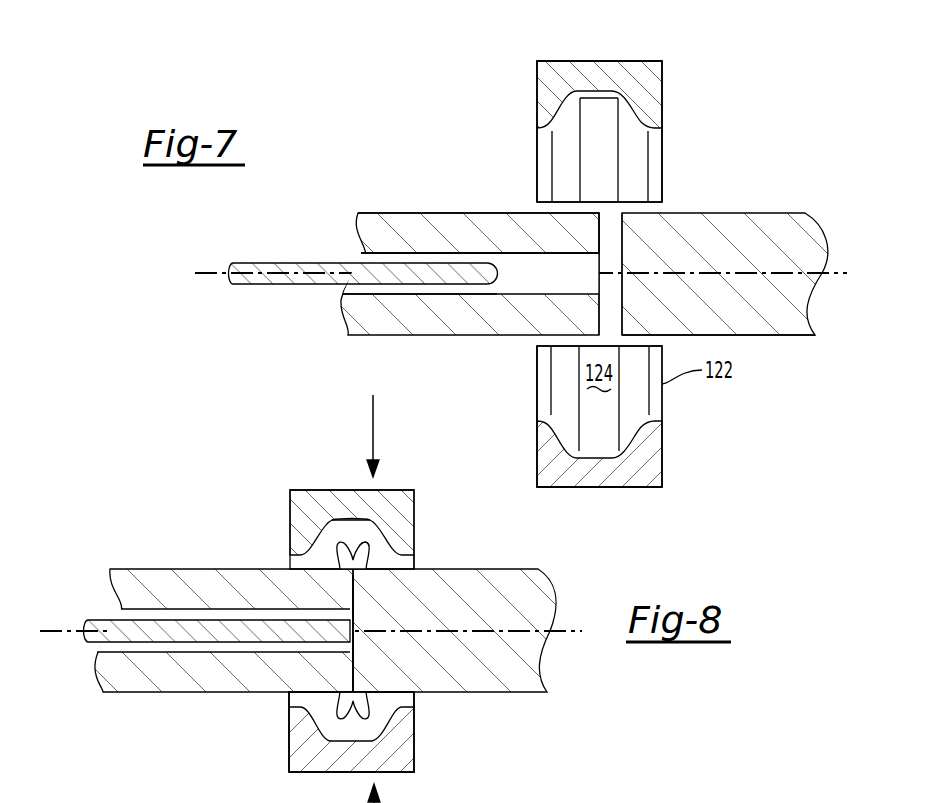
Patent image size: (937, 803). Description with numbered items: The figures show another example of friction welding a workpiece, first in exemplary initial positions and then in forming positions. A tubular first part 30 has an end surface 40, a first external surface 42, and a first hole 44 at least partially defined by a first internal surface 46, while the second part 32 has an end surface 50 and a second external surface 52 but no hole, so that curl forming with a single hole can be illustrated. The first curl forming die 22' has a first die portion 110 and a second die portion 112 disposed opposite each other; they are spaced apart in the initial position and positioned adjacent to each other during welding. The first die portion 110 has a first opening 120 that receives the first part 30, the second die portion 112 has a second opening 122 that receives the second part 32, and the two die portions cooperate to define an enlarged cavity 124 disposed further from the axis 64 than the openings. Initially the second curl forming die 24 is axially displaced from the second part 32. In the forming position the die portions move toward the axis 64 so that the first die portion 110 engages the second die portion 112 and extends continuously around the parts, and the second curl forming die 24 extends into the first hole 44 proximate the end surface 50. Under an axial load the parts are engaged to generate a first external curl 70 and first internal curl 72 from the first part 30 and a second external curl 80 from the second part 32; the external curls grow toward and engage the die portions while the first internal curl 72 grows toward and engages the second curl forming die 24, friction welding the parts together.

In FIG. 7, the first curl forming die 22' is at (641, 287).
In FIG. 8, the first curl forming die 22' is at (322, 585).
In FIG. 7, the second curl forming die 24 is at (310, 265).
In FIG. 8, the second curl forming die 24 is at (92, 637).
In FIG. 7, the first part 30 is at (402, 213).
In FIG. 7, the second part 32 is at (768, 212).
In FIG. 8, the second part 32 is at (504, 573).
In FIG. 7, the end surface 40 is at (597, 305).
In FIG. 8, the end surface 40 is at (345, 652).
In FIG. 7, the first external surface 42 is at (456, 213).
In FIG. 7, the first hole 44 is at (368, 288).
In FIG. 7, the first internal surface 46 is at (524, 253).
In FIG. 7, the end surface 50 is at (624, 247).
In FIG. 8, the end surface 50 is at (355, 580).
In FIG. 7, the second external surface 52 is at (765, 335).
In FIG. 7, the axis 64 is at (205, 273).
In FIG. 8, the axis 64 is at (80, 631).
In FIG. 8, the first external curl 70 is at (348, 548).
In FIG. 8, the first internal curl 72 is at (362, 627).
In FIG. 8, the second external curl 80 is at (371, 549).
In FIG. 7, the first die portion 110 is at (662, 93).
In FIG. 7, the second die portion 112 is at (662, 458).
In FIG. 8, the second die portion 112 is at (417, 748).
In FIG. 7, the first opening 120 is at (537, 374).
In FIG. 8, the first opening 120 is at (297, 702).
In FIG. 7, the second opening 122 is at (662, 160).
In FIG. 8, the second opening 122 is at (416, 701).
In FIG. 7, the cavity 124 is at (611, 184).
In FIG. 8, the cavity 124 is at (352, 541).